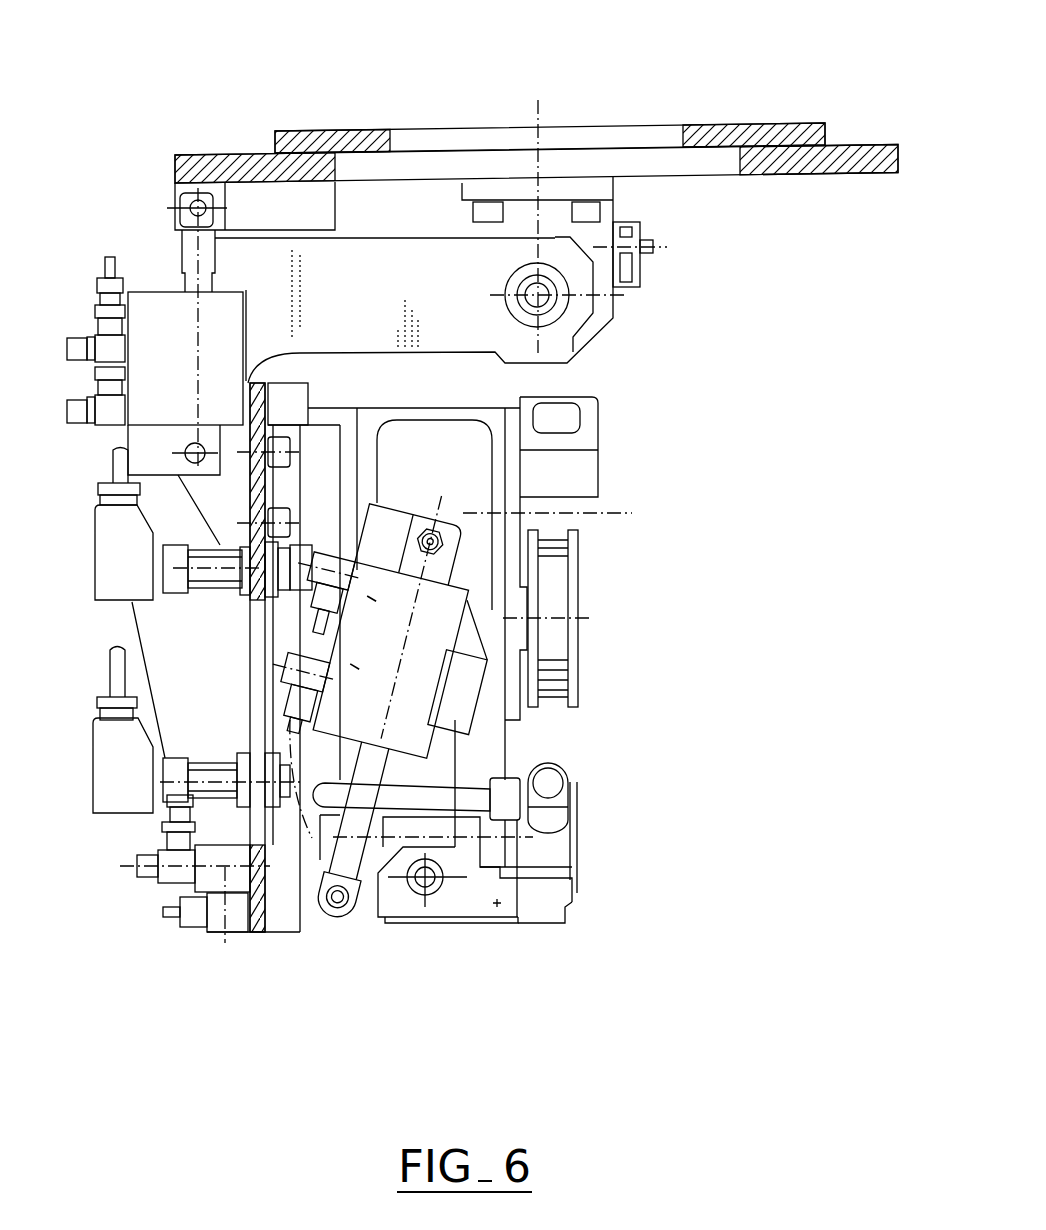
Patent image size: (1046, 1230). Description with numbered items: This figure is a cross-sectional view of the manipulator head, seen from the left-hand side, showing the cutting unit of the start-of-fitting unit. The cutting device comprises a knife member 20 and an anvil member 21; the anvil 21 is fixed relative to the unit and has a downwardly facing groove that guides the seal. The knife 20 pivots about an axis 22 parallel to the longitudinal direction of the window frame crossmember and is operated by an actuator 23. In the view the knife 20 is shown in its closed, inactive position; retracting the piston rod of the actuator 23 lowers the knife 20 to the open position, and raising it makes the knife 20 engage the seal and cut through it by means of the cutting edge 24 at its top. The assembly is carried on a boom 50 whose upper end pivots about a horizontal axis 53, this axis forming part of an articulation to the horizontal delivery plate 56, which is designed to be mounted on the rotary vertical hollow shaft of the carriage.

The knife member 20 is at (474, 868).
The anvil member 21 is at (572, 903).
The axis 22 is at (418, 880).
The actuator 23 is at (414, 655).
The cutting edge 24 is at (556, 867).
The boom 50 is at (288, 290).
The horizontal axis 53 is at (541, 290).
The horizontal delivery plate 56 is at (791, 150).